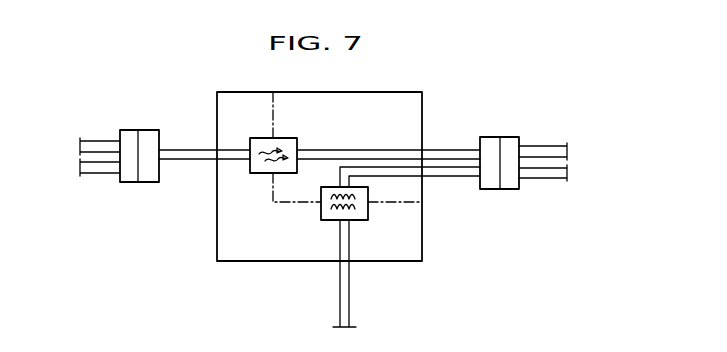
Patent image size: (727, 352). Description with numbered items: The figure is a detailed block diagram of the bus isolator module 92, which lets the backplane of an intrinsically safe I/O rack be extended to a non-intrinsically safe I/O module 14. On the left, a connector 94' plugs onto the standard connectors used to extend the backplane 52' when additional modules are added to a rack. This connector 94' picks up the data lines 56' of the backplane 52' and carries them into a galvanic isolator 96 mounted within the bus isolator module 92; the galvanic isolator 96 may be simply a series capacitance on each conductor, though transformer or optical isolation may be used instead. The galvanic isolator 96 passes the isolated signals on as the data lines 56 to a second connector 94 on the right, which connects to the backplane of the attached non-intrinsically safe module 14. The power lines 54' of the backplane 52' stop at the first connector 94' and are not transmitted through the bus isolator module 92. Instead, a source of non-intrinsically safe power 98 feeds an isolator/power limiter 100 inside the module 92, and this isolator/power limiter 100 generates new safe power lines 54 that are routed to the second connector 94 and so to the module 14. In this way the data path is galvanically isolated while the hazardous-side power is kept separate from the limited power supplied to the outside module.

The non-intrinsically safe I/O module 14 is at (581, 204).
The backplane 52' is at (313, 155).
The safe power lines 54 is at (410, 207).
The power lines 54' is at (82, 194).
The data lines 56 is at (327, 118).
The data lines 56' is at (109, 121).
The bus isolator module 92 is at (268, 262).
The second connector 94 is at (521, 144).
The connector 94' is at (163, 133).
The galvanic isolator 96 is at (282, 138).
The source of non-intrinsically safe power 98 is at (350, 299).
The isolator/power limiter 100 is at (322, 212).